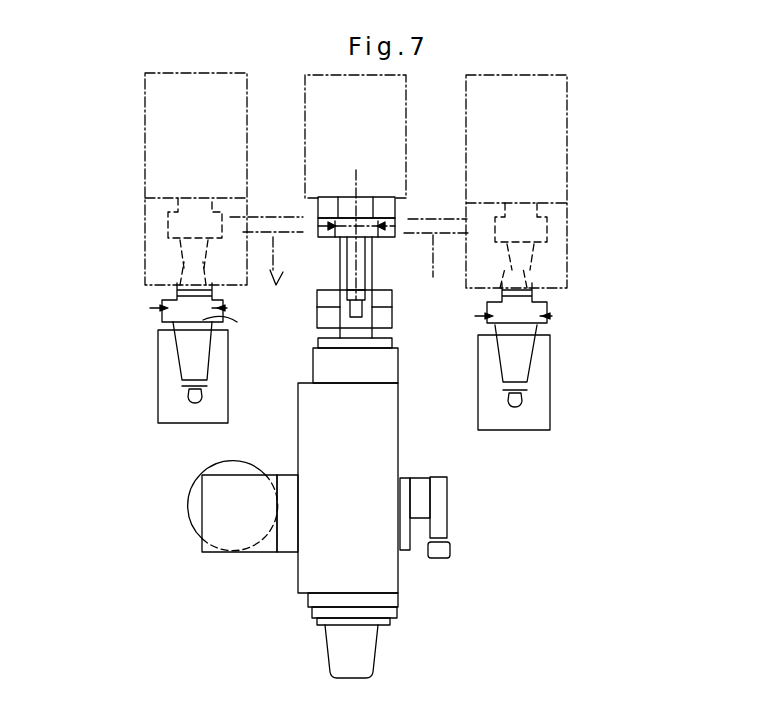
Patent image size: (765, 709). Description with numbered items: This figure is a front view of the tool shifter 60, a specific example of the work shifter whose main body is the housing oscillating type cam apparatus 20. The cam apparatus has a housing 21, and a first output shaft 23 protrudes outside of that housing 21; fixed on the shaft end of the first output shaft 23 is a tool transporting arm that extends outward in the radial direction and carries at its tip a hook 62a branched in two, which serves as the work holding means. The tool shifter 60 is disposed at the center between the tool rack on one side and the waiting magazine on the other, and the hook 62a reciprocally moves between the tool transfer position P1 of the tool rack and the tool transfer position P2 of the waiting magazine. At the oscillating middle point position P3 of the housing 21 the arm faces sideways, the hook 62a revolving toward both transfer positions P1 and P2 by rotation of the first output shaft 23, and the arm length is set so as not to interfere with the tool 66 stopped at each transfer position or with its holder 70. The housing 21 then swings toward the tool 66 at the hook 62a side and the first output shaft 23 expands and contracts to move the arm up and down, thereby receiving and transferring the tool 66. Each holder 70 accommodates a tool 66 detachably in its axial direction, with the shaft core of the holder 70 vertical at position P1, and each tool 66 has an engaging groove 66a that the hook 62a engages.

The housing oscillating type cam apparatus 20 is at (405, 452).
The housing 21 is at (385, 426).
The first output shaft 23 is at (355, 335).
The tool shifter 60 is at (448, 574).
The hook 62a is at (318, 234).
The tool 66 is at (147, 218).
The engaging groove 66a is at (210, 262).
The holder 70 is at (163, 405).
The tool transfer position P1 is at (172, 316).
The tool transfer position P2 is at (540, 317).
The oscillating middle point position P3 is at (375, 238).